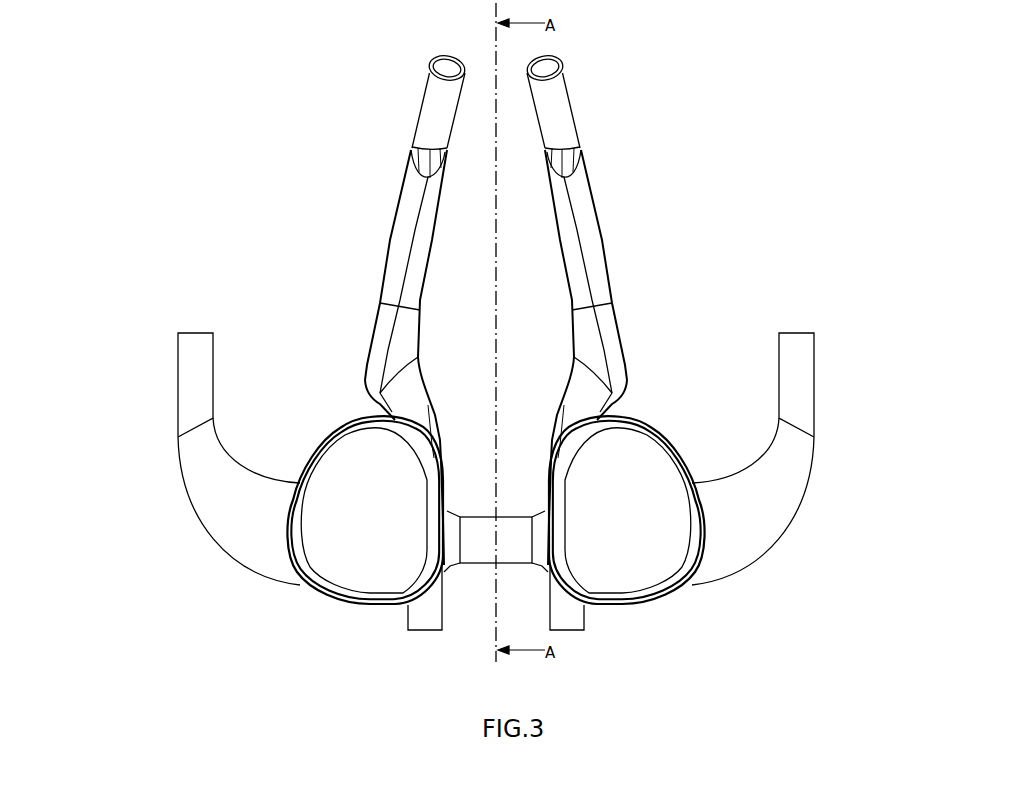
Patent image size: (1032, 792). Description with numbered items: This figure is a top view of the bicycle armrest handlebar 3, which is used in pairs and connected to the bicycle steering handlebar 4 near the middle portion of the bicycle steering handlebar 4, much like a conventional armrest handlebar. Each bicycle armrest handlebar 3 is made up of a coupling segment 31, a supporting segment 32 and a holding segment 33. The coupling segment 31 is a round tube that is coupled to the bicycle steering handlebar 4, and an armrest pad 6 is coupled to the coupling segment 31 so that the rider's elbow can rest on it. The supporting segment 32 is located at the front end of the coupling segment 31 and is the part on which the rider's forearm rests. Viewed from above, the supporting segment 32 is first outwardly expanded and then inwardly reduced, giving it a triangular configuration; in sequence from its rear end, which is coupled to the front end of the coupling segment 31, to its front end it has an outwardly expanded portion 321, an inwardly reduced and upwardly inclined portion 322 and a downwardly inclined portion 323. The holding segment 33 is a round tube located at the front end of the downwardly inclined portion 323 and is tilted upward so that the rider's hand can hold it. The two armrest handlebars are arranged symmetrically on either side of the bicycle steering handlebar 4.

The aerobar assembly 3 is at (100, 88).
The base portion 31 is at (417, 618).
The extension arm 32 is at (173, 152).
The connecting section 321 is at (365, 373).
The arm section 322 is at (380, 273).
The transition section 323 is at (412, 160).
The grip tube 33 is at (418, 108).
The handlebar 4 is at (783, 503).
The armrest pad 6 is at (355, 473).